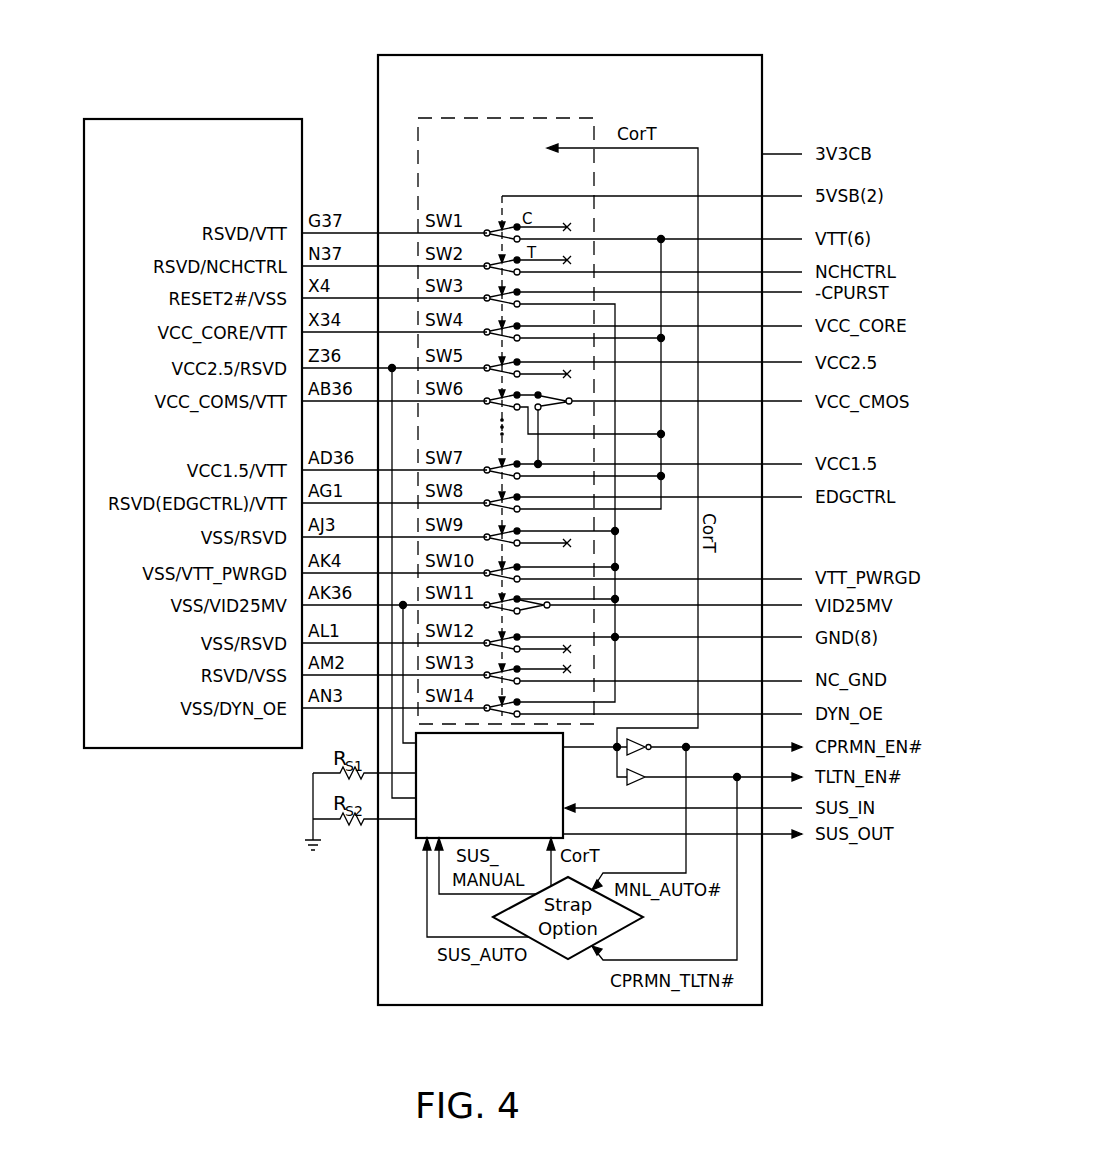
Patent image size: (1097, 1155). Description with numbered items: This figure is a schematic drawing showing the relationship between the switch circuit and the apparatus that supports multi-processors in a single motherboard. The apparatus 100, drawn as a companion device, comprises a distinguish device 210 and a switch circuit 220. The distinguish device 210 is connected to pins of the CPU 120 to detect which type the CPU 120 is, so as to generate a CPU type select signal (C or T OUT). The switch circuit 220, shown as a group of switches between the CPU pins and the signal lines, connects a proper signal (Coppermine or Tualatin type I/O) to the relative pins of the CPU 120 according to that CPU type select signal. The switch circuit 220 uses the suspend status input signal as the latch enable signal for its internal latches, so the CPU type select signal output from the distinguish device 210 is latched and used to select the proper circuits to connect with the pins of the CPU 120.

The apparatus 100 is at (572, 54).
The Socket-370 CPU 120 is at (196, 119).
The switch circuit 220 is at (418, 118).
The distinguish device 210 is at (518, 807).